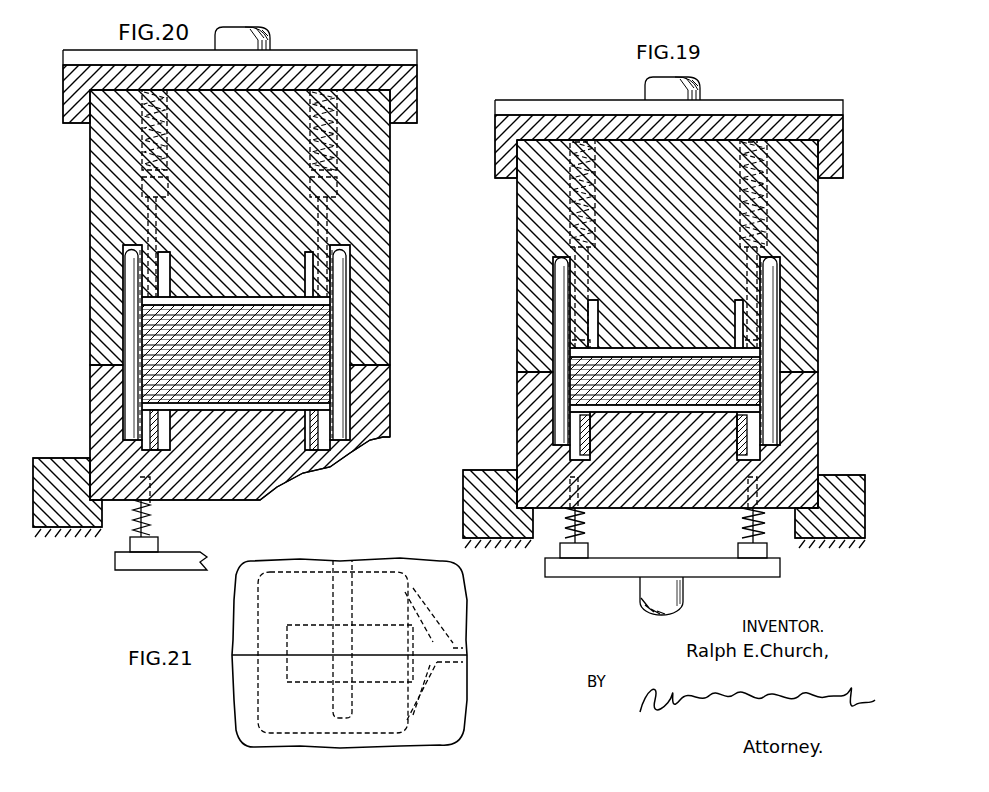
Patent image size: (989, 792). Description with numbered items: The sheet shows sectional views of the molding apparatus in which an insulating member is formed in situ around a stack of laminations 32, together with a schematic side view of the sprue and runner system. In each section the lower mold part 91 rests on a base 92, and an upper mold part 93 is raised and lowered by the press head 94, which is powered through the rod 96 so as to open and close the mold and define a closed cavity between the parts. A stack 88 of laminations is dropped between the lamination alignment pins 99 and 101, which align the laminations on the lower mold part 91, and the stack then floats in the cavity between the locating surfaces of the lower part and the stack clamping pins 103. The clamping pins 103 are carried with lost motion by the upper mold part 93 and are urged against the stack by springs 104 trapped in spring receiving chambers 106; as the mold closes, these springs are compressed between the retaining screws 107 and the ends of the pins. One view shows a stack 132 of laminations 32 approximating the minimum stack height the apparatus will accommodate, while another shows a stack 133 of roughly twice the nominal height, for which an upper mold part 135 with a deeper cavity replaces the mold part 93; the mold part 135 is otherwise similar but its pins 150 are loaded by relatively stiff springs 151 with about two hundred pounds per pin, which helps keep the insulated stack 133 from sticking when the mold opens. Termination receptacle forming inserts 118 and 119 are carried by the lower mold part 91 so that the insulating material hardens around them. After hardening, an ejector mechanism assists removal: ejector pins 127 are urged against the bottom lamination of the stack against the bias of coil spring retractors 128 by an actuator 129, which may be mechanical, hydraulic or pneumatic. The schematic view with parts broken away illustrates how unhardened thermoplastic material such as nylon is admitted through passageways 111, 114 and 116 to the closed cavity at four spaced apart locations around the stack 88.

In FIG. 19, the laminations 32 is at (750, 390).
In FIG. 21, the stack of laminations 88 is at (287, 657).
In FIG. 20, the lower mold part 91 is at (385, 404).
In FIG. 19, the lower mold part 91 is at (810, 415).
In FIG. 21, the lower mold part 91 is at (238, 720).
In FIG. 20, the base 92 is at (53, 458).
In FIG. 19, the base 92 is at (483, 470).
In FIG. 19, the upper mold part 93 is at (818, 260).
In FIG. 21, the upper mold part 93 is at (242, 608).
In FIG. 20, the press head 94 is at (417, 96).
In FIG. 19, the press head 94 is at (826, 110).
In FIG. 20, the rod 96 is at (268, 44).
In FIG. 19, the rod 96 is at (700, 90).
In FIG. 20, the lamination alignment pin 99 is at (125, 327).
In FIG. 19, the lamination alignment pin 99 is at (555, 328).
In FIG. 20, the lamination alignment pin 101 is at (345, 325).
In FIG. 19, the lamination alignment pin 101 is at (770, 327).
In FIG. 19, the stack clamping pins 103 is at (585, 283).
In FIG. 19, the springs 104 is at (597, 223).
In FIG. 21, the springs 104 is at (250, 653).
In FIG. 19, the spring receiving chambers 106 is at (597, 197).
In FIG. 19, the retaining screws 107 is at (600, 160).
In FIG. 21, the passageway 111 is at (455, 645).
In FIG. 21, the passageway 114 is at (437, 613).
In FIG. 21, the passageway 116 is at (440, 685).
In FIG. 20, the termination receptacle forming insert 118 is at (156, 436).
In FIG. 19, the termination receptacle forming insert 118 is at (588, 444).
In FIG. 20, the termination receptacle forming insert 119 is at (316, 440).
In FIG. 19, the termination receptacle forming insert 119 is at (745, 447).
In FIG. 20, the ejector pins 127 is at (152, 511).
In FIG. 19, the ejector pins 127 is at (587, 518).
In FIG. 20, the coil spring retractors 128 is at (156, 532).
In FIG. 19, the coil spring retractors 128 is at (588, 537).
In FIG. 19, the actuator 129 is at (683, 595).
In FIG. 19, the stack of laminations 132 is at (665, 357).
In FIG. 20, the stack of laminations 133 is at (236, 298).
In FIG. 20, the upper mold part 135 is at (390, 230).
In FIG. 20, the pins 150 is at (157, 218).
In FIG. 20, the springs 151 is at (168, 148).